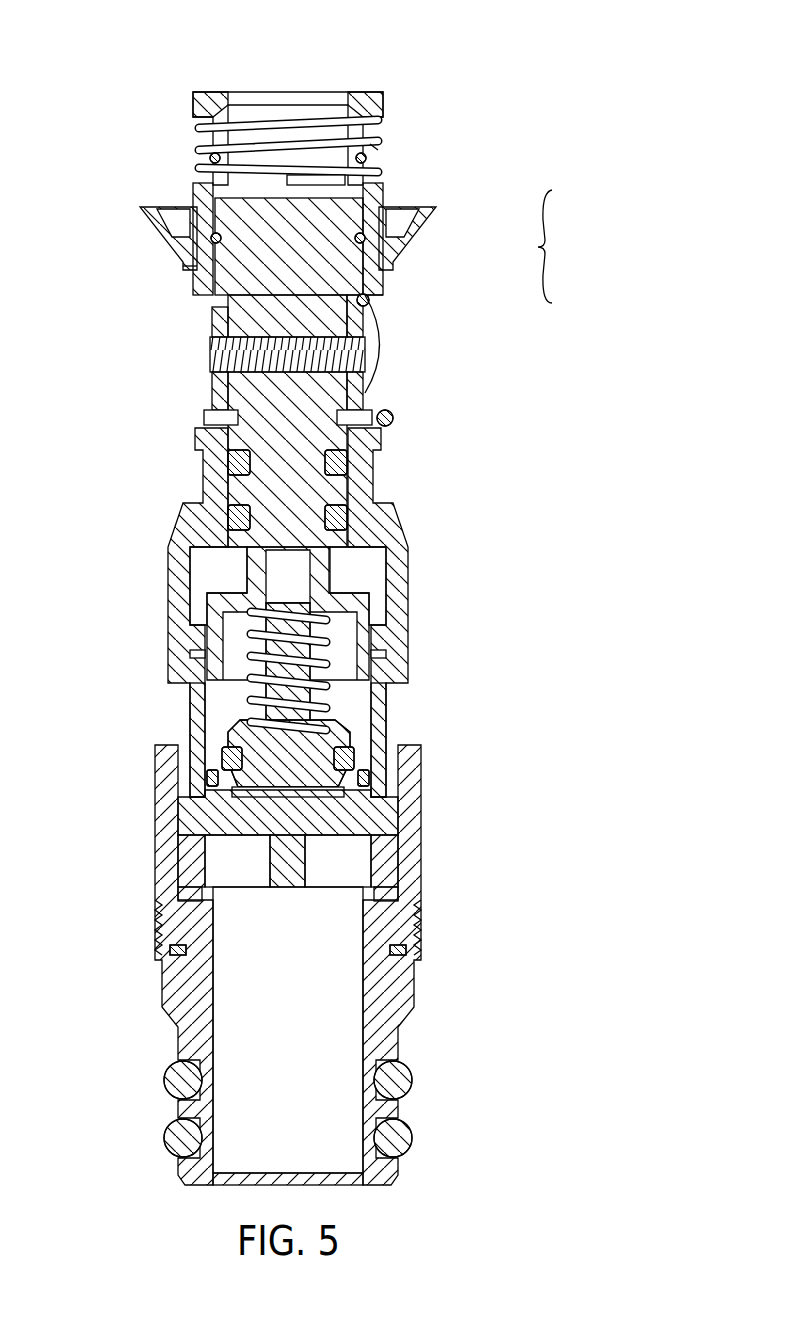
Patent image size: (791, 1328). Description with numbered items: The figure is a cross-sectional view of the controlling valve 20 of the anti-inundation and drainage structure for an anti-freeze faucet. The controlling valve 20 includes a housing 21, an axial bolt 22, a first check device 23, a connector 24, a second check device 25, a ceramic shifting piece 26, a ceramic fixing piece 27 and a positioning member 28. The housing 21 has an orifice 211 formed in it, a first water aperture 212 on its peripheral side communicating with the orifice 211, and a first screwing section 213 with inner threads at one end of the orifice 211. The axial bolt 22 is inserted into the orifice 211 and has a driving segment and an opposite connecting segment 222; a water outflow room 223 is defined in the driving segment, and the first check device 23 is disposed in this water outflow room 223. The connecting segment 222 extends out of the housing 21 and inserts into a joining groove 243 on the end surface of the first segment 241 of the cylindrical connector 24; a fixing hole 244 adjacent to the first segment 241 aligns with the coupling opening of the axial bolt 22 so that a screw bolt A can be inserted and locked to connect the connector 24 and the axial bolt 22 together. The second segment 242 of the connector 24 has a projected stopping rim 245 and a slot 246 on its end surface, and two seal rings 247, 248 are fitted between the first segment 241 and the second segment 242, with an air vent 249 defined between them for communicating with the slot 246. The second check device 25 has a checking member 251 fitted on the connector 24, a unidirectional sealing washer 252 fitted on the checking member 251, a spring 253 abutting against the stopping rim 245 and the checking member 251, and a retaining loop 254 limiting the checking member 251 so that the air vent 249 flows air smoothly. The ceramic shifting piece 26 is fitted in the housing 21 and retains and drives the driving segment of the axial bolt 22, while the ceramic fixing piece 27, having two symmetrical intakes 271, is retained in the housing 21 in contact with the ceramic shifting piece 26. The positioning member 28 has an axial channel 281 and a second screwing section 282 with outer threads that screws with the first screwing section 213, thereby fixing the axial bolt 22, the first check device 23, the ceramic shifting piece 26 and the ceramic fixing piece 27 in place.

The controlling valve 20 is at (540, 106).
The housing 21 is at (180, 612).
The orifice 211 is at (215, 557).
The first water aperture 212 is at (183, 722).
The first screwing section 213 is at (175, 918).
The axial bolt 22 is at (370, 612).
The connecting segment 222 is at (278, 287).
The water outflow room 223 is at (348, 705).
The first check device 23 is at (305, 752).
The connector 24 is at (213, 322).
The first segment 241 is at (388, 424).
The second segment 242 is at (366, 100).
The joining groove 243 is at (364, 318).
The fixing hole 244 is at (216, 368).
The stopping rim 245 is at (385, 106).
The slot 246 is at (272, 108).
The seal ring 247 is at (213, 238).
The seal ring 248 is at (212, 158).
The air vent 249 is at (226, 193).
The second check device 25 is at (565, 246).
The checking member 251 is at (367, 292).
The unidirectional sealing washer 252 is at (415, 228).
The spring 253 is at (375, 147).
The retaining loop 254 is at (370, 302).
The ceramic shifting piece 26 is at (192, 820).
The ceramic fixing piece 27 is at (182, 863).
The intake 271 is at (348, 862).
The positioning member 28 is at (402, 1040).
The channel 281 is at (328, 962).
The second screwing section 282 is at (405, 927).
The screw bolt A is at (376, 362).